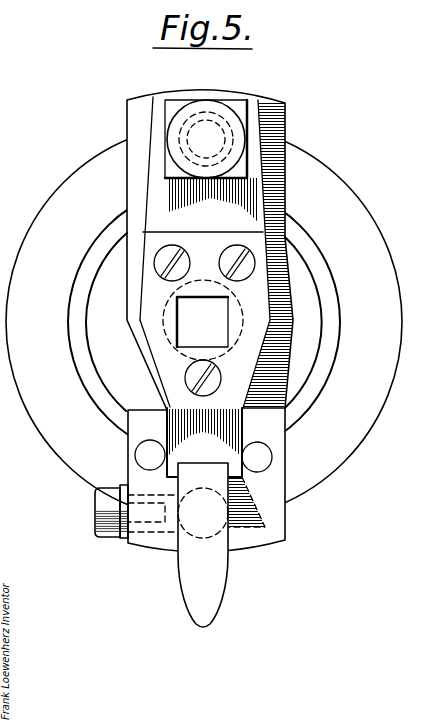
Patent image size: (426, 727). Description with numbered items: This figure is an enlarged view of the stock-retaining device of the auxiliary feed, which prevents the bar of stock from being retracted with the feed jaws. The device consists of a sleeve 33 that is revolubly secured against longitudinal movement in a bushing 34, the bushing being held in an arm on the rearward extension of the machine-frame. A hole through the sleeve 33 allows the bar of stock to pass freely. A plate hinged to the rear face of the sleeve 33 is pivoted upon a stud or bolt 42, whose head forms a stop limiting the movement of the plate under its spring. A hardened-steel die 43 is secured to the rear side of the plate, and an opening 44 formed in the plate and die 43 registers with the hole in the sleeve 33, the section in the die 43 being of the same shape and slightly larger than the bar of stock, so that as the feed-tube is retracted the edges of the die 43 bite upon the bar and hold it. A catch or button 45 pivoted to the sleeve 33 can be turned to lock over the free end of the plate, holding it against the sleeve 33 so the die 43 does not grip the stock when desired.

The sleeve 33 is at (204, 322).
The bushing 34 is at (204, 322).
The stud or bolt 42 is at (238, 135).
The hardened-steel die 43 is at (150, 285).
The opening 44 is at (203, 320).
The catch or button 45 is at (215, 590).